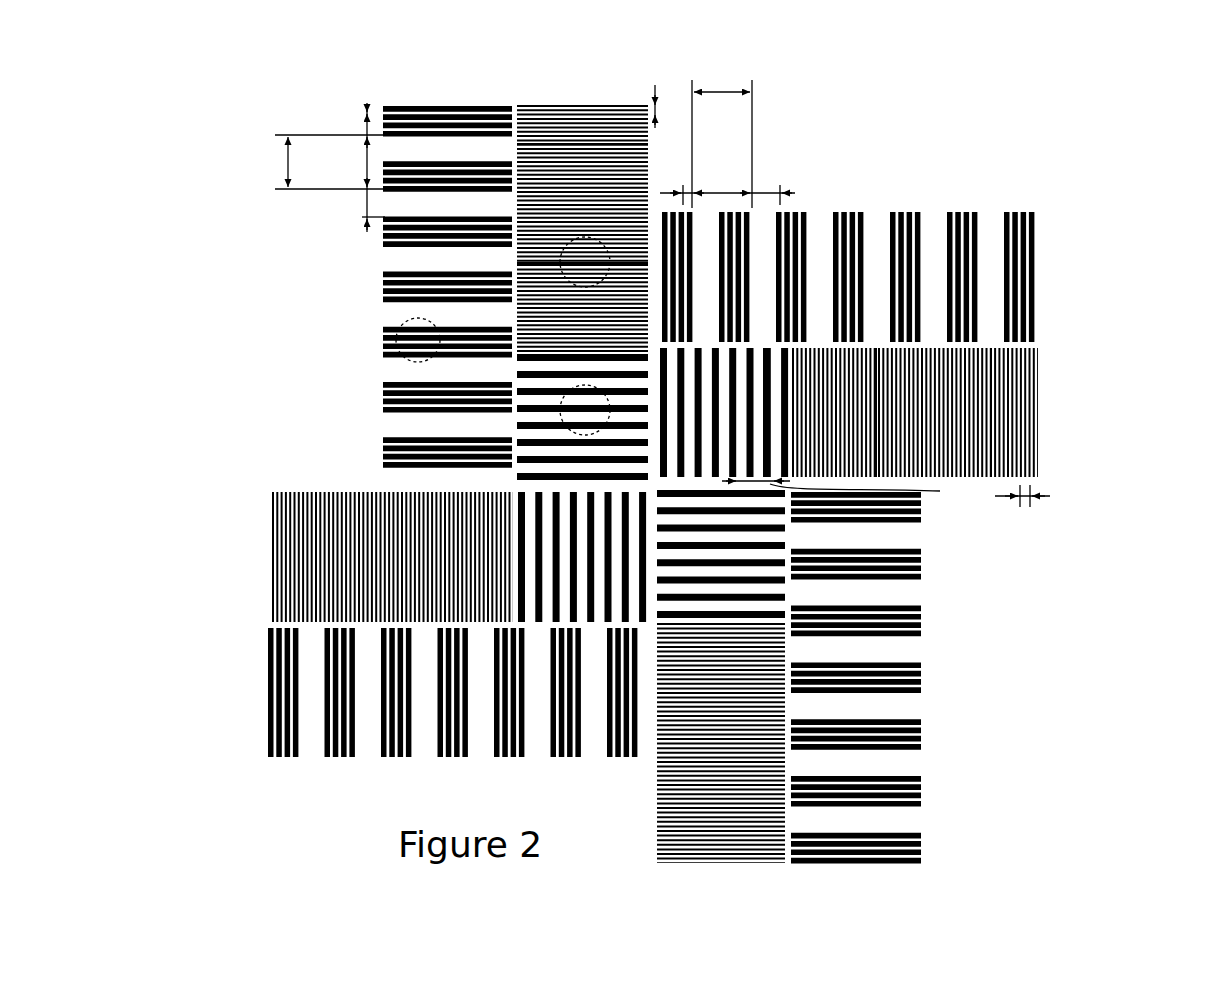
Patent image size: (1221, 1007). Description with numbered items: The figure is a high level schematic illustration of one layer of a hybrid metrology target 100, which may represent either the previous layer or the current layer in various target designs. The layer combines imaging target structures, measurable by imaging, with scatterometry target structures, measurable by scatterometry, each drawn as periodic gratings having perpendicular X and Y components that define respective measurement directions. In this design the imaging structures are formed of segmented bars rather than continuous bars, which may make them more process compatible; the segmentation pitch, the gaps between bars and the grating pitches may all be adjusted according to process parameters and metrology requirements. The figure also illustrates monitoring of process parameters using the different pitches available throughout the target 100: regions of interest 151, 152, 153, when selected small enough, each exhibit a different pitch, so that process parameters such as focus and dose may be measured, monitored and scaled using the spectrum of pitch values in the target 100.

The metrology target 100 is at (170, 76).
The ROI 151 is at (400, 319).
The ROI 152 is at (560, 262).
The ROI 153 is at (561, 416).